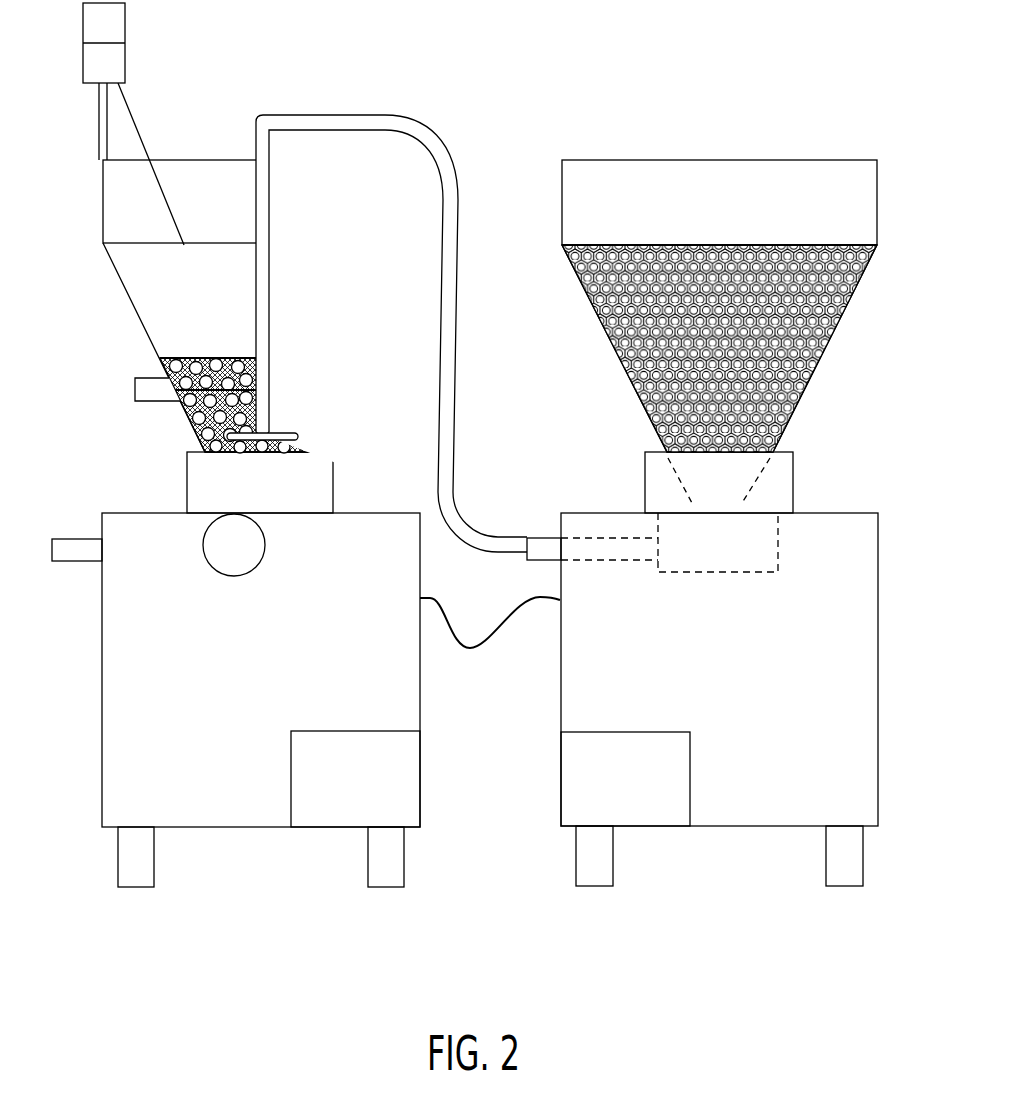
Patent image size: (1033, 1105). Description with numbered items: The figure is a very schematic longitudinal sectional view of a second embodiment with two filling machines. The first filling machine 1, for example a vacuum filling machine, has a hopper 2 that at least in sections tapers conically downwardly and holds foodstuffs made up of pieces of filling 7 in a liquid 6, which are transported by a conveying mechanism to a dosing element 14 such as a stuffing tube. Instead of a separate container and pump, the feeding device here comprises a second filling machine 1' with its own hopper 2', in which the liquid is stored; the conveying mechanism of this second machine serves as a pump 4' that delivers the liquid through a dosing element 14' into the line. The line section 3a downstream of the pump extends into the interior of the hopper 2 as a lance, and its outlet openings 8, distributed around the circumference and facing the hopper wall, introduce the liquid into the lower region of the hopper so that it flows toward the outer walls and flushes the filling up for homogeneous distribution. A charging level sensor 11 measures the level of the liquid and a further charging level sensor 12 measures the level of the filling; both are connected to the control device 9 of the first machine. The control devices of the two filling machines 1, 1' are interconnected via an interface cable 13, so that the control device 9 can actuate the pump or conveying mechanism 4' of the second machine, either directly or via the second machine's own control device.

The filling machine 1 is at (311, 495).
The second filling machine 1' is at (754, 495).
The hopper 2 is at (266, 306).
The hopper 2' is at (731, 306).
The line section 3a is at (271, 206).
The pump 4' is at (670, 542).
The liquid 6 is at (622, 365).
The pieces of filling 7 is at (336, 418).
The outlet opening 8 is at (227, 466).
The control device 9 is at (362, 795).
The charging level sensor 11 is at (148, 398).
The charging level sensor 12 is at (83, 54).
The interface cable 13 is at (488, 650).
The dosing element 14 is at (77, 519).
The dosing element 14' is at (544, 518).